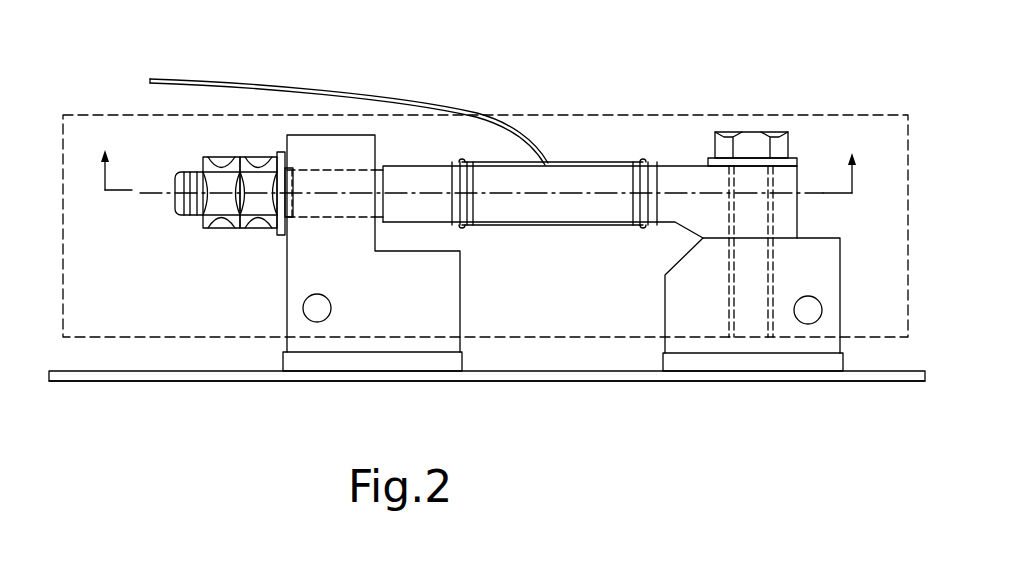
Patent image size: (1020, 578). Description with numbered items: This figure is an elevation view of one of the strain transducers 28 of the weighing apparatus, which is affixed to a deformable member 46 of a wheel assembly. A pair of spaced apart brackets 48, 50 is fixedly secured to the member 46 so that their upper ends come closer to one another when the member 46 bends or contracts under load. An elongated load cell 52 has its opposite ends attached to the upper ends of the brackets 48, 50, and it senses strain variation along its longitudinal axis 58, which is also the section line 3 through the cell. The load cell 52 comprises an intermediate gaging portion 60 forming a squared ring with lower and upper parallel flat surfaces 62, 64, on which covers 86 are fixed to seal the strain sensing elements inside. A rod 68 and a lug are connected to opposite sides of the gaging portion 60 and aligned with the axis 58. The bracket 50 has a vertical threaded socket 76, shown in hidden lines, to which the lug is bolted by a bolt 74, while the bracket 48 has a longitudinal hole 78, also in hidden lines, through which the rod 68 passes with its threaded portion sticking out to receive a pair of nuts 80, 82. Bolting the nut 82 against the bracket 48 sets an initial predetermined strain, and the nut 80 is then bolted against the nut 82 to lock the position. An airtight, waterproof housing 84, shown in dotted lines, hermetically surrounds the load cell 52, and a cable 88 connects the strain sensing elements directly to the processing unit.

The section line 3- 3 is at (478, 154).
The strain transducer 28 is at (510, 84).
The deformable member 46 is at (207, 381).
The bracket 48 is at (432, 300).
The bracket 50 is at (688, 305).
The load cell 52 is at (563, 243).
The longitudinal axis 58 is at (132, 190).
The gaging portion 60 is at (570, 182).
The lower flat surface 62 is at (667, 228).
The upper flat surface 64 is at (698, 166).
The rod 68 is at (183, 172).
The bolt 74 is at (762, 140).
The vertical threaded socket 76 is at (773, 273).
The longitudinal hole 78 is at (330, 170).
The nut 80 is at (223, 226).
The nut 82 is at (263, 226).
The housing 84 is at (820, 115).
The cover 86 is at (515, 162).
The cable 88 is at (302, 83).